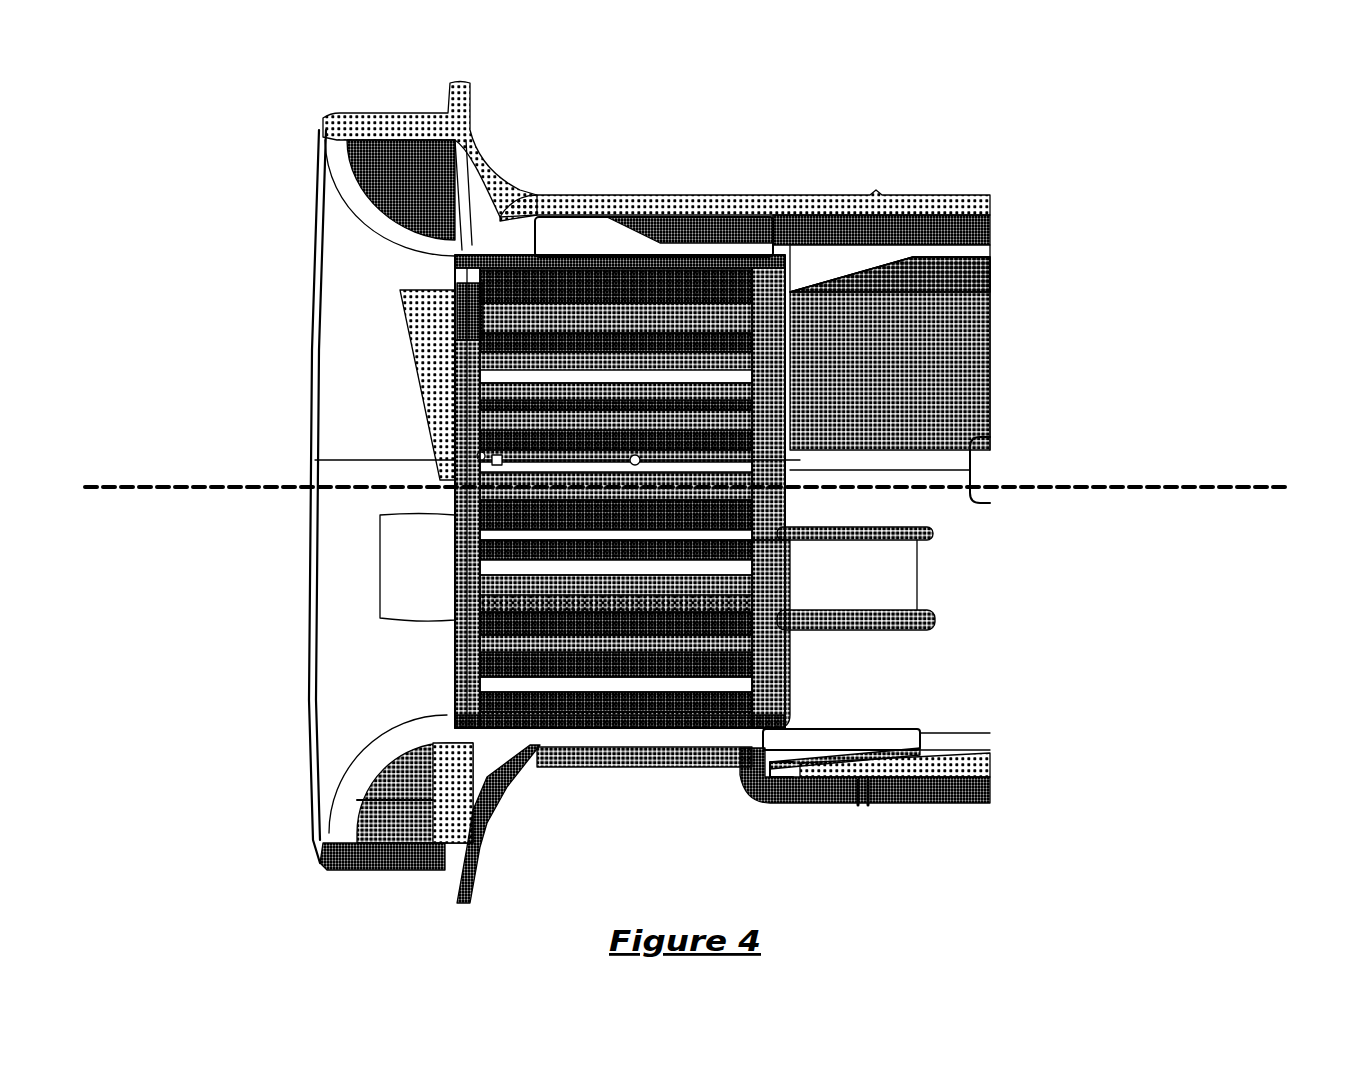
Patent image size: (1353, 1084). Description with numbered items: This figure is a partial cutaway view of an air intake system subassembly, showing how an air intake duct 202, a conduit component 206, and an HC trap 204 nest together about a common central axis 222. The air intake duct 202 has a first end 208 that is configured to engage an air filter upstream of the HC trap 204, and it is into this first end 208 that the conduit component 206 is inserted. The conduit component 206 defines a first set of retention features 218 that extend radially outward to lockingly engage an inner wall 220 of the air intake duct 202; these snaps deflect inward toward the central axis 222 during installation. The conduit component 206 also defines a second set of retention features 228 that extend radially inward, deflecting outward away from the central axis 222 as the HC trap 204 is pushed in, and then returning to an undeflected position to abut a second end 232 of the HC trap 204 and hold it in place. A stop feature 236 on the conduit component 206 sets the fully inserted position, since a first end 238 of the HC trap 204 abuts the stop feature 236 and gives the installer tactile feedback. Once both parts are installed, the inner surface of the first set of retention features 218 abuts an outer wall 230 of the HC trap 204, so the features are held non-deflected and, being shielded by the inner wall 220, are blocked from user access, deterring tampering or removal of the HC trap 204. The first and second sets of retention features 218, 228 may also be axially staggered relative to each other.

The air intake duct 202 is at (843, 198).
The HC trap 204 is at (672, 313).
The conduit component 206 is at (345, 692).
The first end 208 is at (383, 118).
The first set of retention features 218 is at (597, 235).
The inner wall 220 is at (943, 232).
The central axis 222 is at (1240, 487).
The second set of retention features 228 is at (827, 270).
The outer wall 230 is at (497, 245).
The second end 232 is at (790, 347).
The stop feature 236 is at (440, 262).
The first end 238 is at (436, 320).